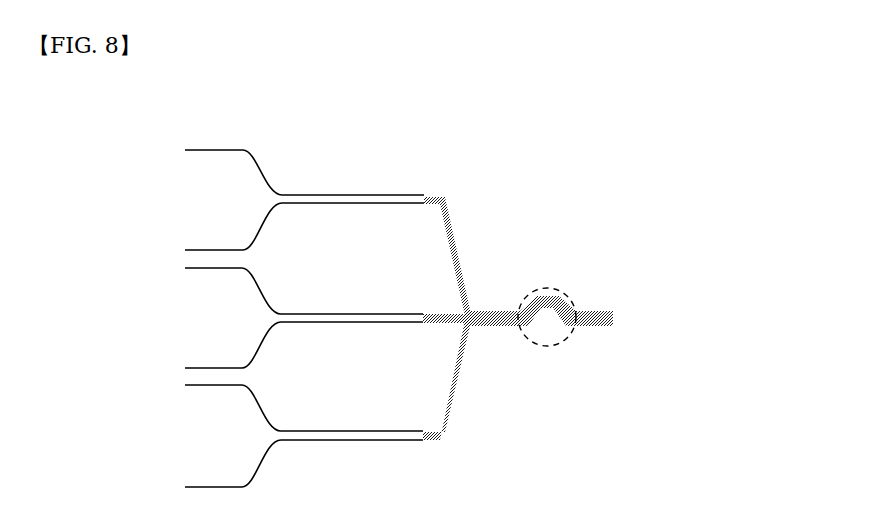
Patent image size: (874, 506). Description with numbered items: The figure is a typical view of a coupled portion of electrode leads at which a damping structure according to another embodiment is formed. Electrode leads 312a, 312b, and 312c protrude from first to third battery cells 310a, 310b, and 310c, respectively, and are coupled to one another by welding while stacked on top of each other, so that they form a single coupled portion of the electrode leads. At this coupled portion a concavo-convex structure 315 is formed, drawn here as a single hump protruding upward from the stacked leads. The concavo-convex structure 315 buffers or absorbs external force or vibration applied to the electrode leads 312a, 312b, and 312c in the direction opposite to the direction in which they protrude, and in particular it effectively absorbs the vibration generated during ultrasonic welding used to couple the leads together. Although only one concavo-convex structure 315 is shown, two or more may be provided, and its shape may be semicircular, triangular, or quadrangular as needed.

The first battery cell 310a is at (213, 205).
The second battery cell 310b is at (210, 323).
The third battery cell 310c is at (207, 428).
The concavo-convex structure 315 is at (545, 290).
The electrode lead 312a is at (592, 310).
The electrode lead 312b is at (612, 313).
The electrode lead 312c is at (610, 325).